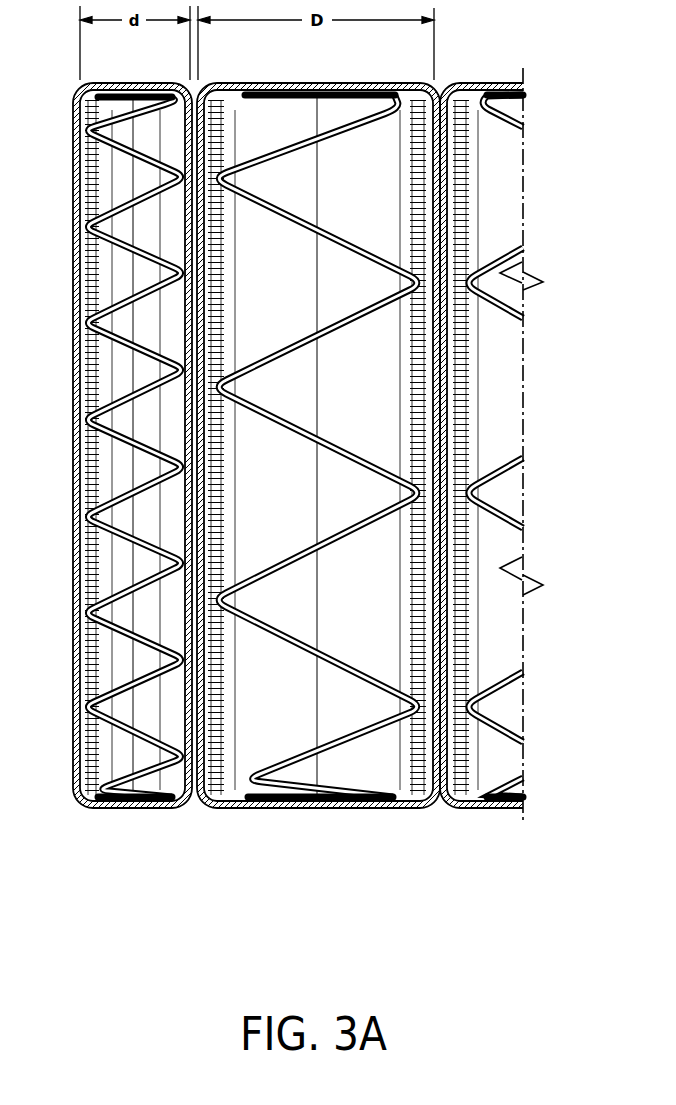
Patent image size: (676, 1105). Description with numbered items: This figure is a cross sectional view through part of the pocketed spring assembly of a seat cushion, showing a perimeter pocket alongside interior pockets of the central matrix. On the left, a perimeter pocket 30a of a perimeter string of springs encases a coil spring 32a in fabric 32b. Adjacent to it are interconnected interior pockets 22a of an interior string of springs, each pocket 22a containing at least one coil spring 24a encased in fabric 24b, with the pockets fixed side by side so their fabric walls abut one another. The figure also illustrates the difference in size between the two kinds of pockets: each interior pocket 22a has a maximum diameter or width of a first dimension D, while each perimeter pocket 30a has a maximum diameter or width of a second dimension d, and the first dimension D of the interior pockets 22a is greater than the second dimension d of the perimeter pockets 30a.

The pocket 22a is at (244, 813).
The coil spring 24a is at (307, 450).
The fabric 24b is at (361, 83).
The perimeter pocket 30a is at (129, 813).
The coil spring 32a is at (120, 348).
The fabric 32b is at (142, 83).